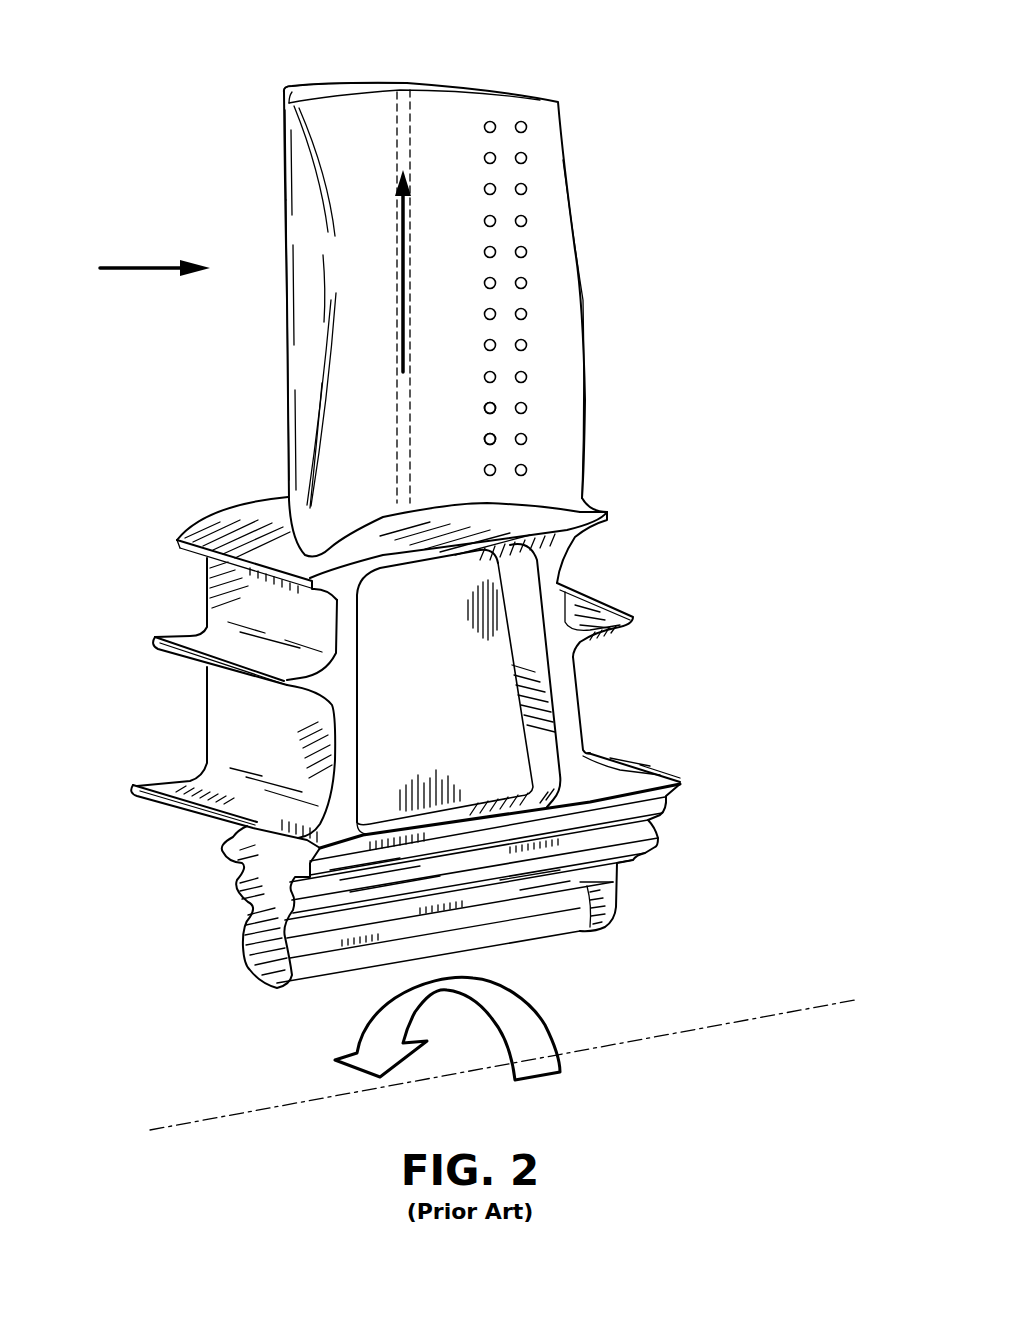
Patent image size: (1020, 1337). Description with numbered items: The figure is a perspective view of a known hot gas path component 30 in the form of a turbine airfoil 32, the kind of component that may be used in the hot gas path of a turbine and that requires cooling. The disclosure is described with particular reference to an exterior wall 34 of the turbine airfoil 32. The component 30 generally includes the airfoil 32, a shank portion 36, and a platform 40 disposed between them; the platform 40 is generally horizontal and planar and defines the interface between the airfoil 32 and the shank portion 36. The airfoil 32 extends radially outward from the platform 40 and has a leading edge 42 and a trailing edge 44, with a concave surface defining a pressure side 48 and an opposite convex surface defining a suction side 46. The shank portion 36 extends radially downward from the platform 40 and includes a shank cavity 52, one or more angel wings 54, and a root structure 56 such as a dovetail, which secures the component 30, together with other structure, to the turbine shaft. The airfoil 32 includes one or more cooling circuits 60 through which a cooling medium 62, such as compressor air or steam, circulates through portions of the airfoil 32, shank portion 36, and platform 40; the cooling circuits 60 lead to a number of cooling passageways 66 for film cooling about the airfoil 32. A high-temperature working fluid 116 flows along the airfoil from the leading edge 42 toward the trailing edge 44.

The hot gas path component 30 is at (661, 358).
The turbine airfoil 32 is at (563, 158).
The exterior wall 34 is at (284, 87).
The shank portion 36 is at (172, 803).
The platform 40 is at (178, 541).
The leading edge 42 is at (288, 331).
The trailing edge 44 is at (583, 299).
The suction side 46 is at (285, 146).
The pressure side 48 is at (464, 369).
The shank cavity 52 is at (440, 642).
The angel wing 54 is at (633, 617).
The root structure 56 is at (268, 988).
The cooling circuit 60 is at (412, 115).
The cooling medium 62 is at (403, 268).
The cooling passageway 66 is at (484, 409).
The working fluid 116 is at (148, 267).